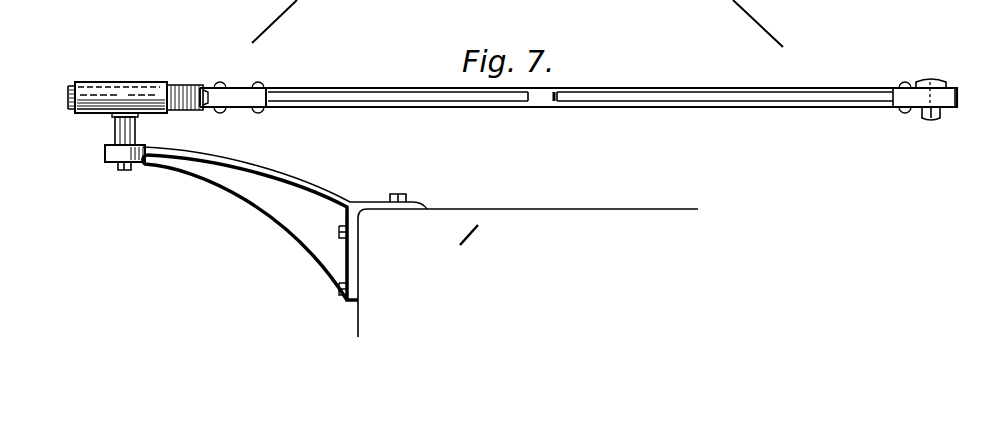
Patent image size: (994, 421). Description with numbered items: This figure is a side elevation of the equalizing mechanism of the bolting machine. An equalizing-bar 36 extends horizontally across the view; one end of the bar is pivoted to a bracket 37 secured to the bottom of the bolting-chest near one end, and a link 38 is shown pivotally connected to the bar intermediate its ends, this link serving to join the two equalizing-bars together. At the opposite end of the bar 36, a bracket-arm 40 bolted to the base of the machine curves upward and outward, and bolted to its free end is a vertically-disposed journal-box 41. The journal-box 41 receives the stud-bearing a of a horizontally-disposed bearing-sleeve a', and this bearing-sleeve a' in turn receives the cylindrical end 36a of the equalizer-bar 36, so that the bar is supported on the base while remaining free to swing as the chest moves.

The equalizing-bar 36 is at (653, 94).
The cylindrical end of equalizer-bar 36a is at (192, 78).
The bracket 37 is at (943, 63).
The link 38 is at (547, 95).
The bracket-arm 40 is at (213, 167).
The journal-box 41 is at (131, 128).
The stud-bearing a is at (110, 129).
The bearing-sleeve a' is at (117, 82).